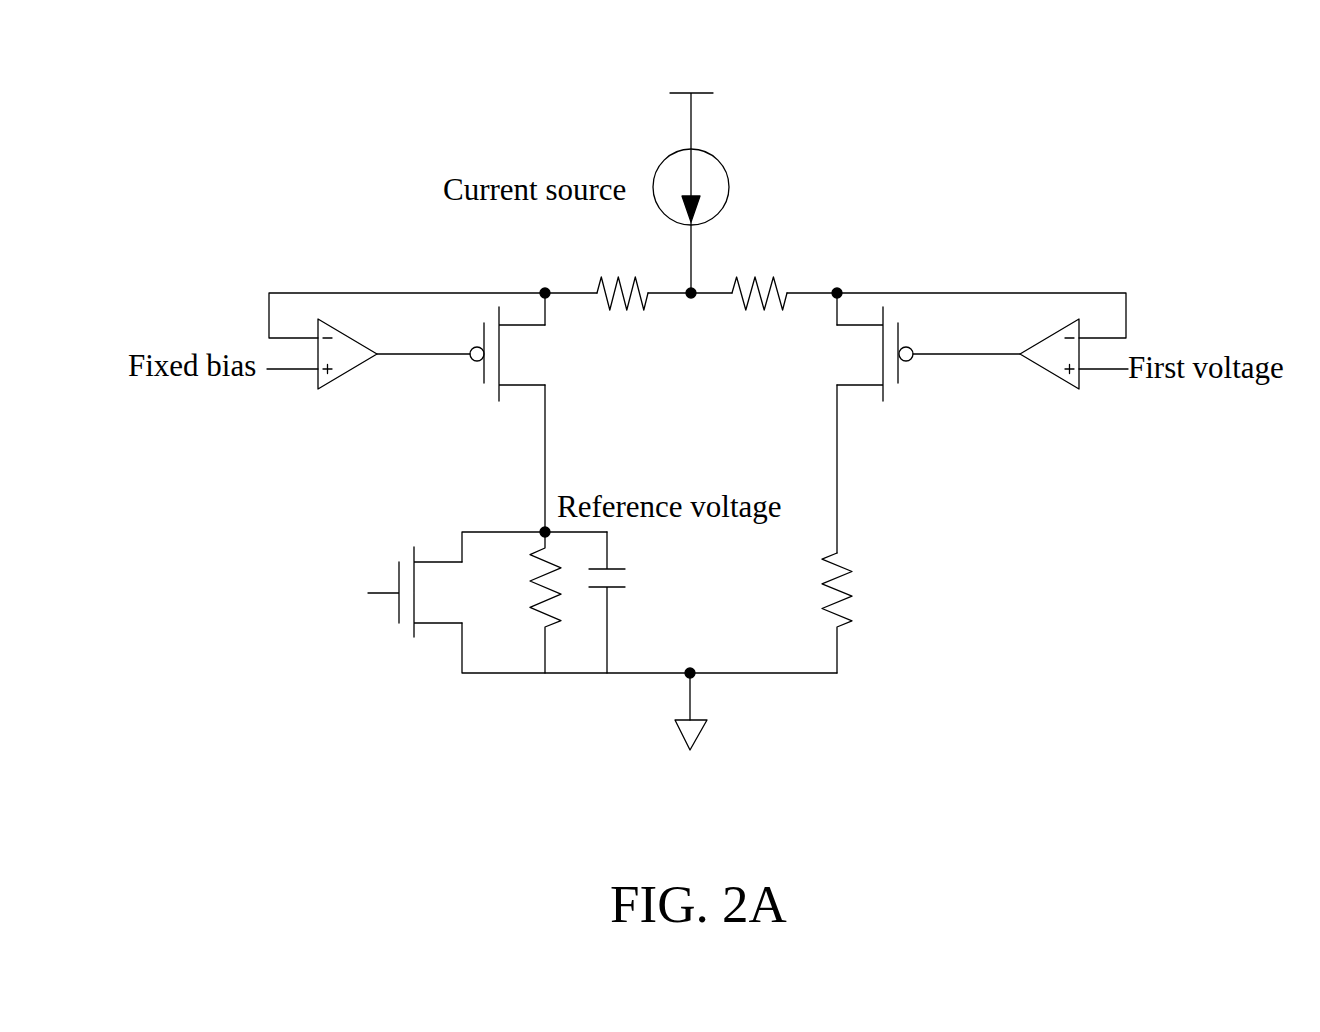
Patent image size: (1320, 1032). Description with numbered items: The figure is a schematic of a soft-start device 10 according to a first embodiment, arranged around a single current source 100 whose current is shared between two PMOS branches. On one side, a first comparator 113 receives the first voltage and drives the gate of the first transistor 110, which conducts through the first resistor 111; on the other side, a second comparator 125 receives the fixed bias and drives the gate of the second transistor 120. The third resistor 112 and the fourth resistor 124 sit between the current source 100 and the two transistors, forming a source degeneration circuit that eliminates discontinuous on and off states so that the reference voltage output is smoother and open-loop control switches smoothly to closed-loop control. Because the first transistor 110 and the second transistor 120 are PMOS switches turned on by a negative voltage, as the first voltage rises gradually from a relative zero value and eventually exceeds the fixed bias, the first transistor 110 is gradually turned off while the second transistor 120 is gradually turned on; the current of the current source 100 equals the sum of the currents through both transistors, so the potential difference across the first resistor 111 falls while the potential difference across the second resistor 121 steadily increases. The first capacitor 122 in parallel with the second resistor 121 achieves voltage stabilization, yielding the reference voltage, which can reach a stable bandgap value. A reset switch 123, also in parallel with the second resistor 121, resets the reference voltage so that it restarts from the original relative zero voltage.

The reference voltage generating circuit 10 is at (964, 80).
The current source 100 is at (730, 187).
The first transistor 110 is at (899, 395).
The first resistor 111 is at (847, 622).
The third resistor 112 is at (765, 313).
The first comparator 113 is at (1065, 384).
The second transistor 120 is at (490, 393).
The second resistor 121 is at (528, 605).
The first capacitor 122 is at (597, 595).
The reset switch 123 is at (405, 642).
The fourth resistor 124 is at (617, 313).
The second comparator 125 is at (332, 386).